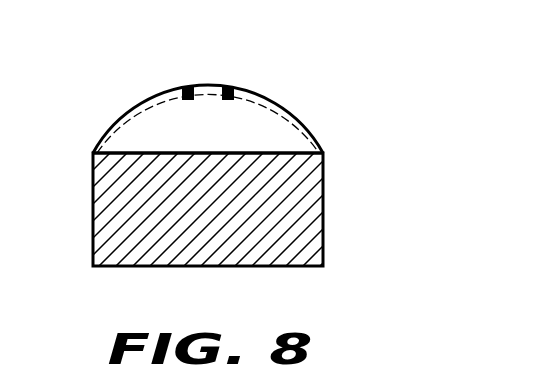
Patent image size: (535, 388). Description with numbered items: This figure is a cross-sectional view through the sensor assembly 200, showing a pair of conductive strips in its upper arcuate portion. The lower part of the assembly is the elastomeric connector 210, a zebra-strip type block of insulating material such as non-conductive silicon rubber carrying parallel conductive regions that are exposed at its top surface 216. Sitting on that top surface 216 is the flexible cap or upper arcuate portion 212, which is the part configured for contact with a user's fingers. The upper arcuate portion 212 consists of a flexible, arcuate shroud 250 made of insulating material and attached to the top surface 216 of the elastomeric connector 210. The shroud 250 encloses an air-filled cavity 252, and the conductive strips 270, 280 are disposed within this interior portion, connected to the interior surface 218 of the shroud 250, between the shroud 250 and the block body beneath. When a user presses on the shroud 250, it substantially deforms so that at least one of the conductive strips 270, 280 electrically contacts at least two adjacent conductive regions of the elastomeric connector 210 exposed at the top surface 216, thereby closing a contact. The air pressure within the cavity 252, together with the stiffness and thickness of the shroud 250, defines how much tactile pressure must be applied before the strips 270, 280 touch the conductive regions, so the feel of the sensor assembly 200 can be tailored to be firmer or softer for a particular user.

The sensor assembly 200 is at (192, 48).
The elastomeric connector 210 is at (302, 213).
The upper arcuate portion 212 is at (319, 111).
The top surface 216 is at (123, 152).
The interior surface 218 is at (138, 108).
The shroud 250 is at (289, 110).
The air-filled cavity 252 is at (265, 130).
The conductive strip 270 is at (230, 87).
The conductive strip 280 is at (186, 87).